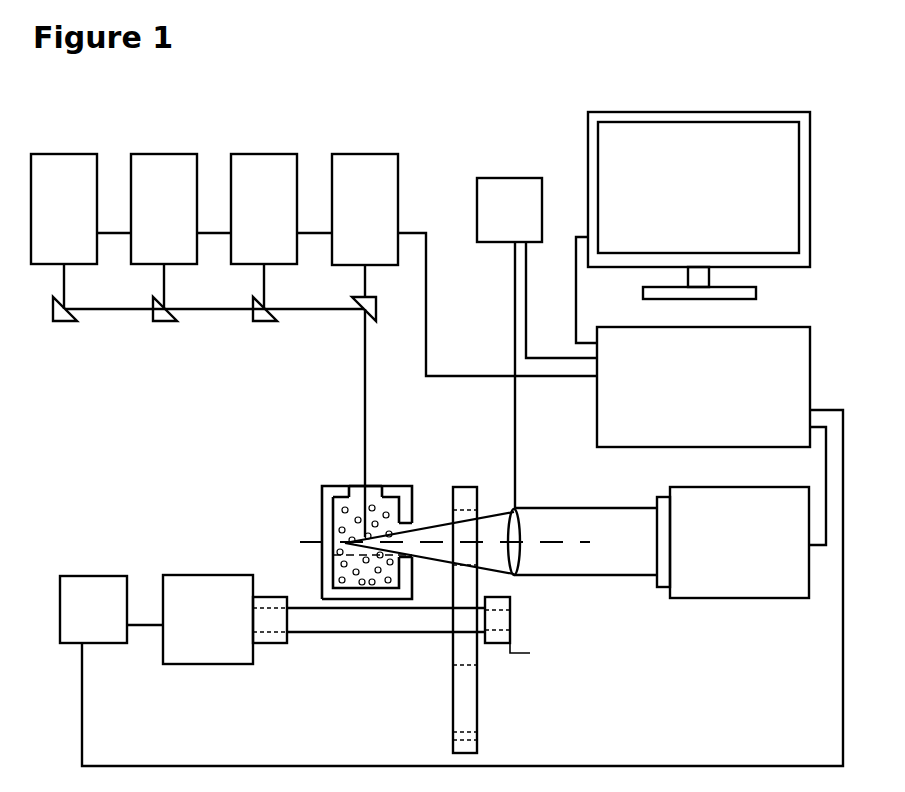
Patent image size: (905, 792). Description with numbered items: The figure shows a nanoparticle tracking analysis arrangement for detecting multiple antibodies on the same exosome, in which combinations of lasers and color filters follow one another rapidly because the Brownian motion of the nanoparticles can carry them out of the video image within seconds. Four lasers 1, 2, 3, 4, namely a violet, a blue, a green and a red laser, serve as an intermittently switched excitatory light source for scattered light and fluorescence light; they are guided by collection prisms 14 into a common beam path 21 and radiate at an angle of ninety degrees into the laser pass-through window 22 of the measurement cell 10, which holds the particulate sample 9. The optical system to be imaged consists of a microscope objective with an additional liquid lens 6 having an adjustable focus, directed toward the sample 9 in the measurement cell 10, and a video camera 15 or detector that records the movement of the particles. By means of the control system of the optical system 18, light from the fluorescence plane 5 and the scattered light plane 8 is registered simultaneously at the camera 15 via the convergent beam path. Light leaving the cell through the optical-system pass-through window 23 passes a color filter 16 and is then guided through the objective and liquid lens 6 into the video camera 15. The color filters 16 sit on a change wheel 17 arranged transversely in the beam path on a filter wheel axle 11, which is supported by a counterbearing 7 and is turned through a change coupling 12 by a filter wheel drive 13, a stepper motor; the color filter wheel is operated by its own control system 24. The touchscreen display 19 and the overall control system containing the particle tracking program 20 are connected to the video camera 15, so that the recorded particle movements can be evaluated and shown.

The laser 1 is at (66, 152).
The laser 2 is at (159, 152).
The laser 3 is at (267, 152).
The laser 4 is at (361, 152).
The fluorescence plane 5 is at (400, 522).
The liquid lens 6 is at (520, 508).
The counterbearing 7 is at (522, 653).
The scattered light plane 8 is at (426, 558).
The sample 9 is at (373, 575).
The measurement cell 10 is at (348, 595).
The filter wheel axle 11 is at (308, 620).
The change coupling 12 is at (268, 622).
The filter wheel drive 13 is at (192, 632).
The collection prisms 14 is at (77, 321).
The video camera 15 is at (745, 598).
The color filter 16 is at (463, 698).
The change wheel for color filters 17 is at (477, 740).
The control system for optical system 18 is at (508, 185).
The touchscreen display 19 is at (810, 153).
The overall control system containing particle tracking program 20 is at (810, 373).
The beam path for laser 21 is at (365, 393).
The laser pass-through window 22 is at (358, 487).
The optical-system pass-through window 23 is at (333, 555).
The control system for color filter wheel 24 is at (93, 592).